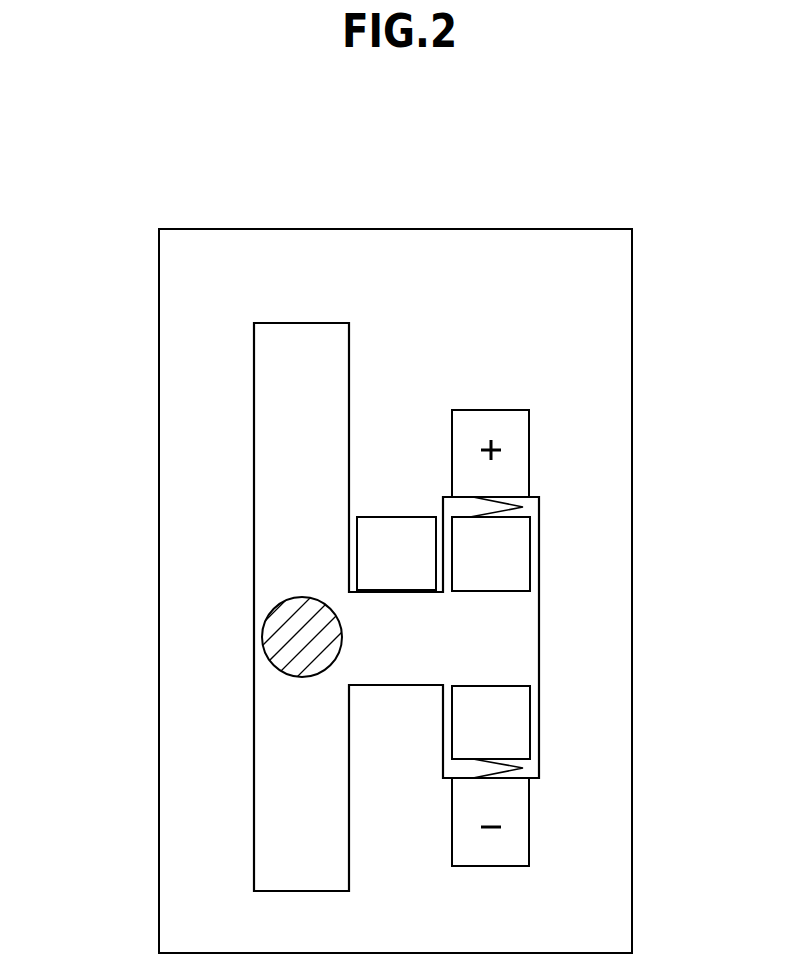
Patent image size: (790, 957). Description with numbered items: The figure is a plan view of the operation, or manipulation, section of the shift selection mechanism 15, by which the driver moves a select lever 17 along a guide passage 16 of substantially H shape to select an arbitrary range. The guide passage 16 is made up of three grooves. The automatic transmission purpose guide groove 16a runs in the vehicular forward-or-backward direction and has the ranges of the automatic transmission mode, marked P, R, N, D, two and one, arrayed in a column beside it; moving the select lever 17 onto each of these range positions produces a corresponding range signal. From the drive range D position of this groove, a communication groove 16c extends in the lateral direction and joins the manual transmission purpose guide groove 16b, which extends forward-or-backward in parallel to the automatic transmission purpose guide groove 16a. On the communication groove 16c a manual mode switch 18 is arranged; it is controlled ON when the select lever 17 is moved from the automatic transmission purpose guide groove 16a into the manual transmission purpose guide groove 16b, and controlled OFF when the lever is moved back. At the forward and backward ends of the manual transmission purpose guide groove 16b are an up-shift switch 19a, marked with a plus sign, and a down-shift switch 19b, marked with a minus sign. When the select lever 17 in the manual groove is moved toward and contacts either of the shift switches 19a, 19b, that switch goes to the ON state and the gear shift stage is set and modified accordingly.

The shift selection mechanism 15 is at (638, 167).
The guide passage 16 is at (302, 356).
The automatic transmission purpose guide groove 16a is at (282, 415).
The manual transmission purpose guide groove 16b is at (517, 636).
The communication groove 16c is at (400, 648).
The select lever 17 is at (268, 611).
The manual mode switch 18 is at (398, 535).
The up-shift switch 19a is at (517, 452).
The down-shift switch 19b is at (517, 826).